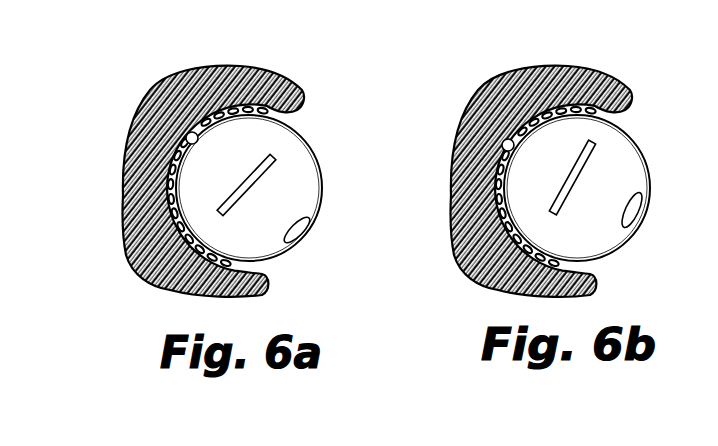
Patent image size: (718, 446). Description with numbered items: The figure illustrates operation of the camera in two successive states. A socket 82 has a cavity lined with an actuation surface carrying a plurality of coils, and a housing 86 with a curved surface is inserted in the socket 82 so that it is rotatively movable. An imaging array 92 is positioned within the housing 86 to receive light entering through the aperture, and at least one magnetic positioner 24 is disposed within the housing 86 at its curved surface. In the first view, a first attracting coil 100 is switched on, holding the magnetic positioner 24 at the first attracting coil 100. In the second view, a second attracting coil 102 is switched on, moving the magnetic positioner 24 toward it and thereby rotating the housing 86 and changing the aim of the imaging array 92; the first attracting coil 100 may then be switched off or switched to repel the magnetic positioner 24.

In FIG. 6A, the magnetic positioner 24 is at (197, 143).
In FIG. 6B, the magnetic positioner 24 is at (524, 169).
In FIG. 6A, the socket 82 is at (152, 268).
In FIG. 6B, the socket 82 is at (520, 186).
In FIG. 6A, the housing 86 is at (293, 140).
In FIG. 6B, the housing 86 is at (602, 185).
In FIG. 6A, the imaging array 92 is at (260, 183).
In FIG. 6B, the imaging array 92 is at (629, 177).
In FIG. 6A, the first attracting coil 100 is at (160, 123).
In FIG. 6B, the second attracting coil 102 is at (496, 186).